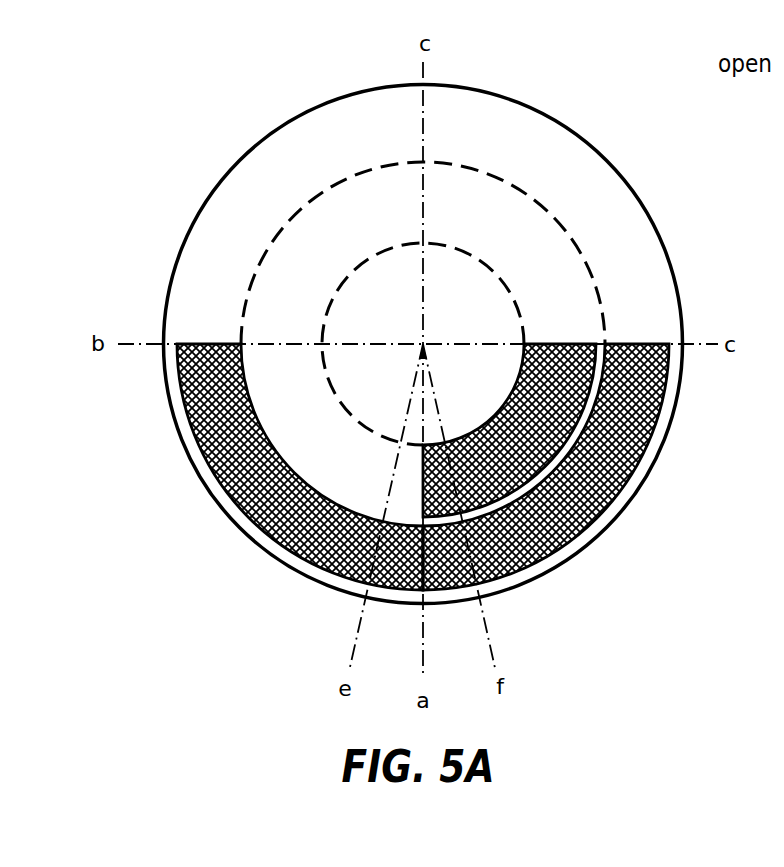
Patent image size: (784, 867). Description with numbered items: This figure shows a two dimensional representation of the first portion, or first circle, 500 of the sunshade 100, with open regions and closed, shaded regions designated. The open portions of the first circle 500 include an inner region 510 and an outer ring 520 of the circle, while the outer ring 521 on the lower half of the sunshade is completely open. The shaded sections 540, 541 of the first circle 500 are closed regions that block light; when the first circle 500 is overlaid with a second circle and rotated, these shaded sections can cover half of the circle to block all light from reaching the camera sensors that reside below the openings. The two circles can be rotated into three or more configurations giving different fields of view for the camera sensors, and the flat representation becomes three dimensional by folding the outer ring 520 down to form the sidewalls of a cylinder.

The sunshade 100 is at (276, 90).
The inner ring open portion 510 is at (423, 292).
The outer ring 520 is at (577, 242).
The shaded section of first circle 540 is at (477, 292).
The shaded section of first circle 541 is at (480, 241).
The outer ring on lower half 521 is at (507, 441).
The first portion (first circle) 500 is at (415, 467).